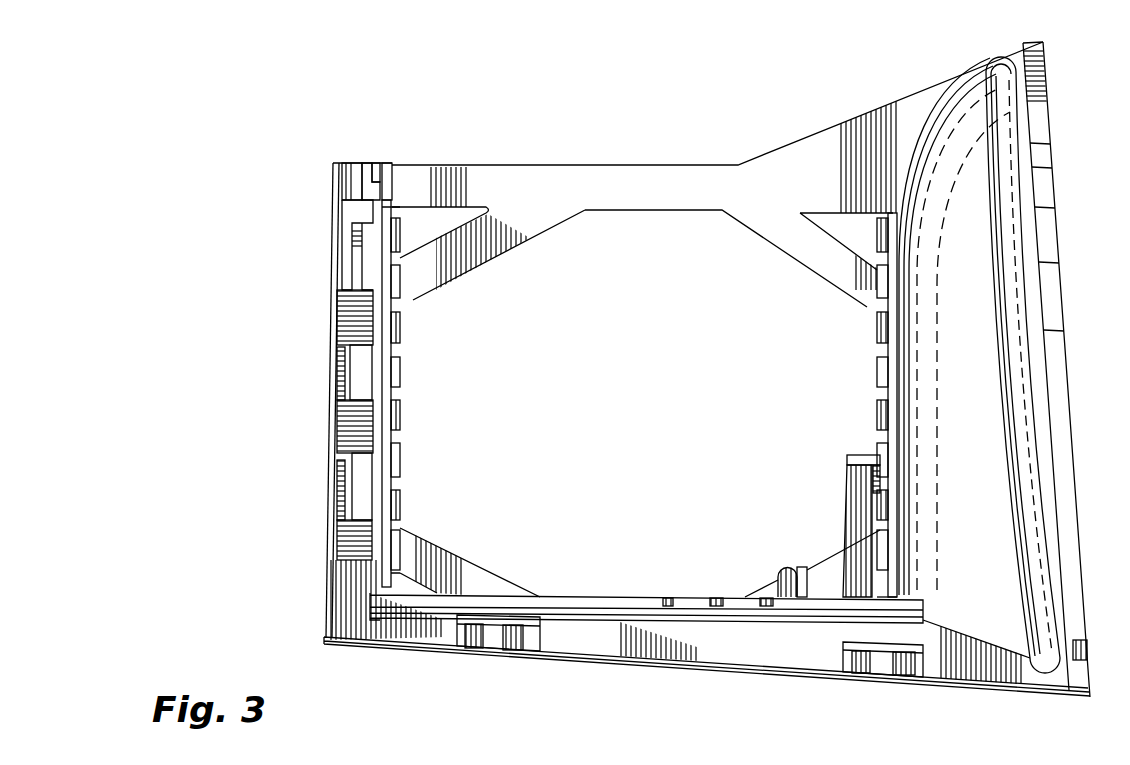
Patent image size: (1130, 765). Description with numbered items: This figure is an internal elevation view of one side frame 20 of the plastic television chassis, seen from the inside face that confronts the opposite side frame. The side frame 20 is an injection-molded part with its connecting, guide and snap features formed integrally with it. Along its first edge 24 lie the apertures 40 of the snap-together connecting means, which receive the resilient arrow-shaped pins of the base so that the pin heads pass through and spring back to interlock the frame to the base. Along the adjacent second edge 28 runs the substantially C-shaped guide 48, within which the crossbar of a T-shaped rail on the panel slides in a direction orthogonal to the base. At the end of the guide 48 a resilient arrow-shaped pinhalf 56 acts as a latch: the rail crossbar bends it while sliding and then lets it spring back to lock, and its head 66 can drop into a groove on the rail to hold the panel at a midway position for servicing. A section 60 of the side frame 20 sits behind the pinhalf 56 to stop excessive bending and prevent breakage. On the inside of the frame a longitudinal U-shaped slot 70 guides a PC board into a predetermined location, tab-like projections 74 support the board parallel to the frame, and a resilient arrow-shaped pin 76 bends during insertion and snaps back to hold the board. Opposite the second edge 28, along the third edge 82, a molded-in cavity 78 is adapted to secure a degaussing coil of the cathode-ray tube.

The side frame 20 is at (886, 104).
The first edge 24 is at (610, 667).
The second edge 28 is at (333, 240).
The apertures 40 is at (502, 633).
The C-shaped guide 48 is at (350, 163).
The pinhalf 56 is at (375, 183).
The section of side frame 60 is at (393, 181).
The head of pinhalf 66 is at (377, 178).
The U-shaped slot 70 is at (373, 603).
The tab-like projections 74 is at (400, 230).
The pin 76 is at (847, 470).
The molded-in cavity 78 is at (992, 62).
The third edge 82 is at (1047, 50).